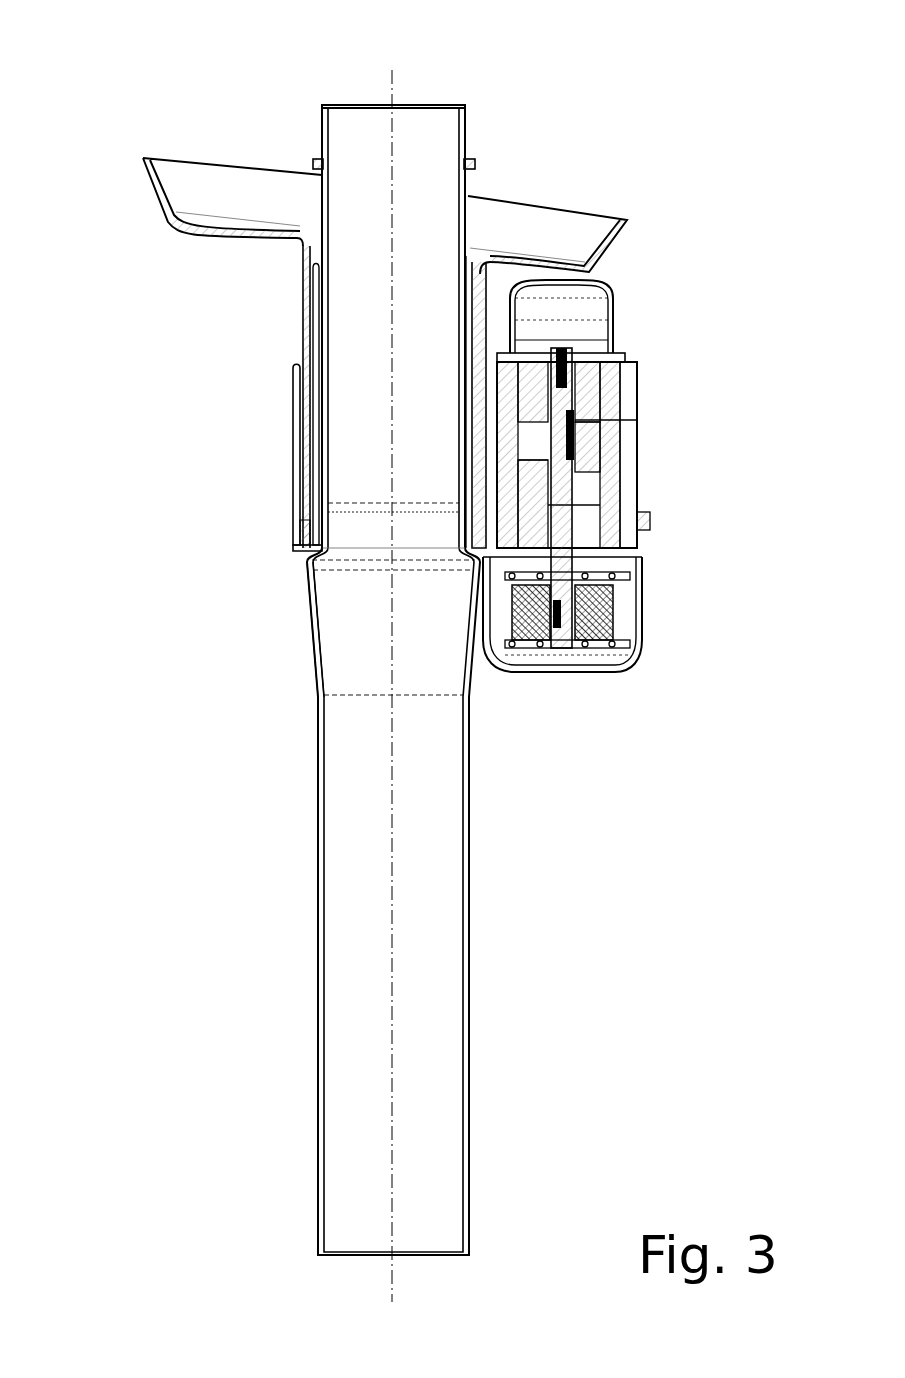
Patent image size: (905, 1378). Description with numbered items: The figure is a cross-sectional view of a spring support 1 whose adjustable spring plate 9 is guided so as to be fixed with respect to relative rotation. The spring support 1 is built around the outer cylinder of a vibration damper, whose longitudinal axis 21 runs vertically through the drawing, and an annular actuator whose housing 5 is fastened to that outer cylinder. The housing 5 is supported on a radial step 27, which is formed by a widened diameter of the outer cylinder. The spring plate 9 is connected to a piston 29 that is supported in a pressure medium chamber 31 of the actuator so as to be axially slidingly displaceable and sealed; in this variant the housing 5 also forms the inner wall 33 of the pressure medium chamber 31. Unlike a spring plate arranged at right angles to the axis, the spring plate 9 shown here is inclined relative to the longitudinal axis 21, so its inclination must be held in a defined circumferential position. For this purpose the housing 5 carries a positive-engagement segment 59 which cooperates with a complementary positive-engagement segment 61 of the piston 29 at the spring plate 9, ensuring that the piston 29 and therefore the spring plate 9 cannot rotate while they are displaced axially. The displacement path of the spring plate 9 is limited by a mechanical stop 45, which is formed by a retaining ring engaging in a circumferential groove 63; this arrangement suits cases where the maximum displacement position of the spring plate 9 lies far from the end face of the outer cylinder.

The spring support 1 is at (232, 518).
The housing 5 is at (296, 460).
The spring plate 9 is at (199, 233).
The longitudinal axis 21 is at (400, 788).
The radial step 27 is at (296, 558).
The piston 29 is at (302, 352).
The pressure medium chamber 31 is at (304, 528).
The inner wall 33 is at (320, 426).
The mechanical stop 45 is at (472, 162).
The positive-engagement segment 59 is at (463, 243).
The complementary positive-engagement segment 61 is at (463, 243).
The circumferential groove 63 is at (326, 165).